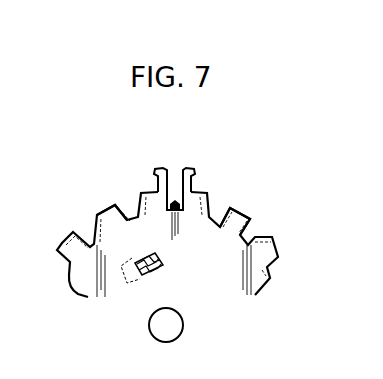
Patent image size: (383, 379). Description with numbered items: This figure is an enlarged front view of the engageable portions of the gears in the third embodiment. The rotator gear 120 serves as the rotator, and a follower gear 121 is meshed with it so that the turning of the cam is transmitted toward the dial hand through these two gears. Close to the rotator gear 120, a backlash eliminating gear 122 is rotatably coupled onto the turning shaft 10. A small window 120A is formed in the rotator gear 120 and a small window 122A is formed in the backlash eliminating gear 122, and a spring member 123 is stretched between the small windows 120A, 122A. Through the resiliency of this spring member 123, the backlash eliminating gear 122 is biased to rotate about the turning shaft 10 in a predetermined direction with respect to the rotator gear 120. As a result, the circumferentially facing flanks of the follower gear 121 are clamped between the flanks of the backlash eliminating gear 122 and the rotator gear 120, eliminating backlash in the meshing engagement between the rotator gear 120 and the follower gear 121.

The turning shaft 10 is at (183, 323).
The rotator gear 120 is at (251, 232).
The small window 120A is at (127, 284).
The follower gear 121 is at (191, 176).
The backlash eliminating gear 122 is at (229, 207).
The small window 122A is at (165, 259).
The spring member 123 is at (146, 255).